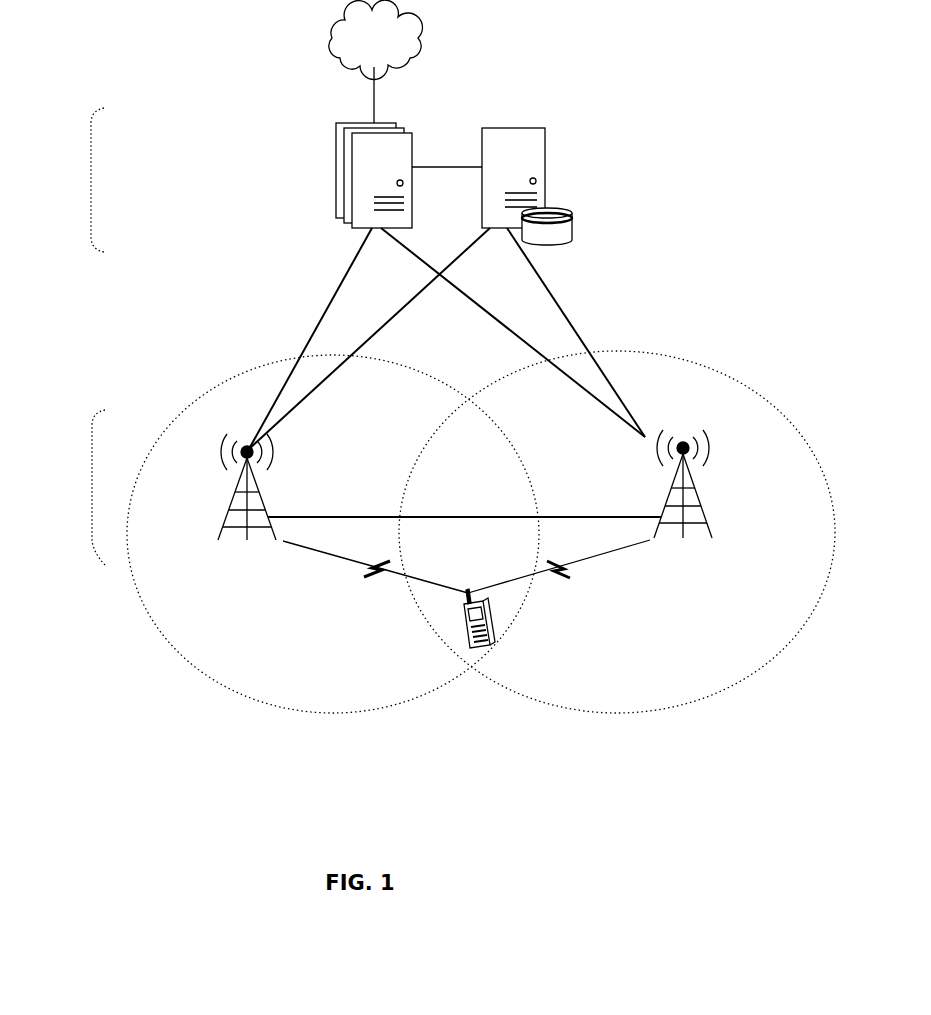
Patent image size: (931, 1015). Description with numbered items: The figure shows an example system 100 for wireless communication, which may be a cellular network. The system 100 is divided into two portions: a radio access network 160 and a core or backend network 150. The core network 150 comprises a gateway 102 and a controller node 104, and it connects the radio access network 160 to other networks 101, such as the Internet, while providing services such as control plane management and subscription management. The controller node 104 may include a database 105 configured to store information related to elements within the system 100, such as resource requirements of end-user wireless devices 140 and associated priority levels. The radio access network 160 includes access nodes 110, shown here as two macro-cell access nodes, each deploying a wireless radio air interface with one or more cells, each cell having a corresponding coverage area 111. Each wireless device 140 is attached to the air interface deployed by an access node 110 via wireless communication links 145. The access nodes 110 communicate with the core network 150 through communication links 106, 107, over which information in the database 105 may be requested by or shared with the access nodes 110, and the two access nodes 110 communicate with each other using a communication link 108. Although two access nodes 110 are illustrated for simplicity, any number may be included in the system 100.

The system 100 is at (622, 48).
The other networks 101 is at (362, 46).
The gateway 102 is at (336, 143).
The controller node 104 is at (546, 150).
The database 105 is at (573, 221).
The communication links 106 is at (334, 298).
The communication links 107 is at (394, 318).
The communication link 108 is at (334, 517).
The access nodes 110 is at (222, 537).
The coverage area 111 is at (224, 687).
The wireless devices 140 is at (464, 626).
The wireless communication links 145 is at (378, 576).
The core network 150 is at (88, 180).
The radio access network 160 is at (88, 489).